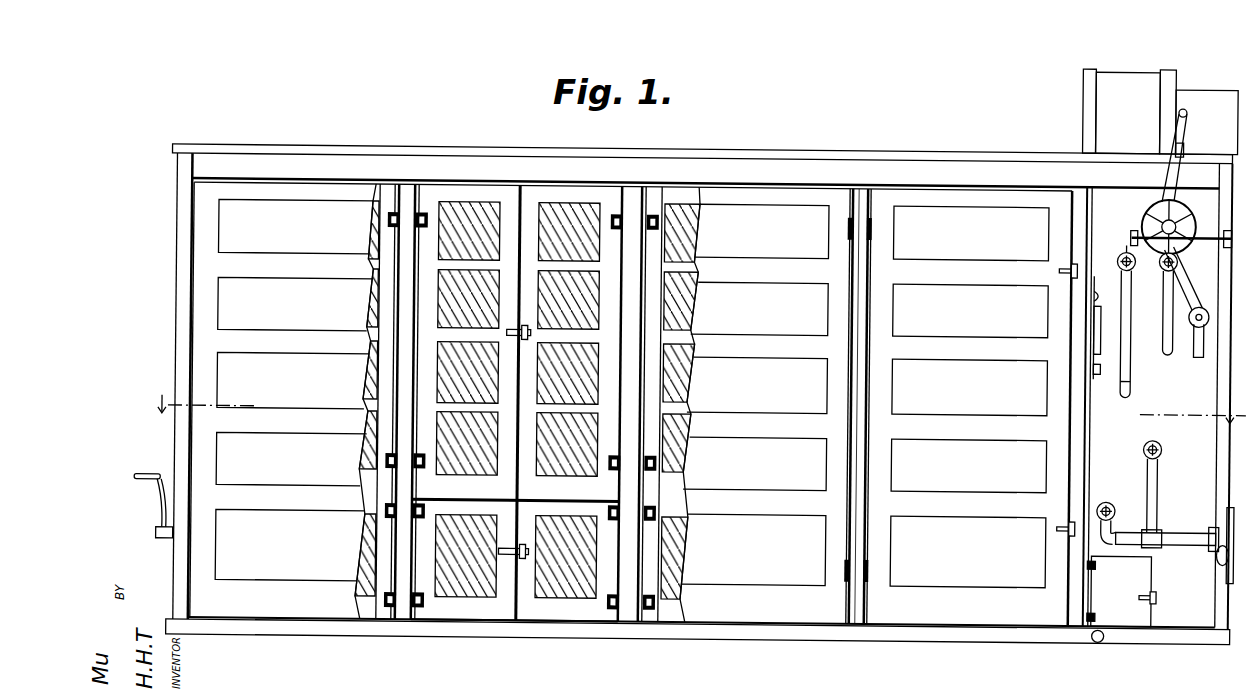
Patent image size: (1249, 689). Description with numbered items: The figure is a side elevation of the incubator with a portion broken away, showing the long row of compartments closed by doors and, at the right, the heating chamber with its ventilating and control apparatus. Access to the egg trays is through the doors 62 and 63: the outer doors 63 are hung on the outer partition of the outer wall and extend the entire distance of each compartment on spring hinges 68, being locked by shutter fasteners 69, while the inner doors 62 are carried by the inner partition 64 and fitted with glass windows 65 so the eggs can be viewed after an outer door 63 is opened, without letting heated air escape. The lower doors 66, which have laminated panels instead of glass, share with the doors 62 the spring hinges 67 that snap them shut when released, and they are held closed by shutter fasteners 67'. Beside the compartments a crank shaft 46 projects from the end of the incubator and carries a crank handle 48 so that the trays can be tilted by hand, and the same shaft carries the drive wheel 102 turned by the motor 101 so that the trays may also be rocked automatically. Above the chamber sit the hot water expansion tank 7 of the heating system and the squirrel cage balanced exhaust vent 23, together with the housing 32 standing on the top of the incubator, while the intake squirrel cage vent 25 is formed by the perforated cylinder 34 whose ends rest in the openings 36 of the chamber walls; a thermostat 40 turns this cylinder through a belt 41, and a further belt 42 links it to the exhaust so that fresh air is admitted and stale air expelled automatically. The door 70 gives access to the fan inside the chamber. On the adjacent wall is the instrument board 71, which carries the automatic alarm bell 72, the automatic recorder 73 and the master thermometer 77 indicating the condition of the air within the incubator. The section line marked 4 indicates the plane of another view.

The section line 4- 4 is at (694, 411).
The hot water expansion tank 7 is at (1208, 96).
The squirrel cage balanced exhaust vent 23 is at (1088, 96).
The intake squirrel cage vent 25 is at (1150, 208).
The fan casing 32 is at (1118, 85).
The cylinder 34 is at (1131, 228).
The openings 36 is at (1186, 210).
The thermostat 40 is at (1196, 350).
The belt 41 is at (1199, 296).
The belt 42 is at (1168, 172).
The crank shaft 46 is at (157, 535).
The crank handles 48 is at (147, 473).
The doors 62 is at (365, 186).
The doors 63 is at (290, 193).
The inner partition 64 is at (396, 212).
The glass windows 65 is at (452, 220).
The doors 66 is at (370, 612).
The spring hinges 67 is at (516, 444).
The shutter fasteners 67' is at (520, 441).
The spring hinges 68 is at (865, 234).
The shutter fasteners 69 is at (1062, 266).
The door 70 is at (1138, 606).
The instrument board 71 is at (1092, 347).
The automatic alarm bell 72 is at (1122, 279).
The automatic recorder 73 is at (1120, 327).
The master thermometer 77 is at (1120, 367).
The motor 101 is at (1214, 503).
The drive wheel 102 is at (1227, 553).